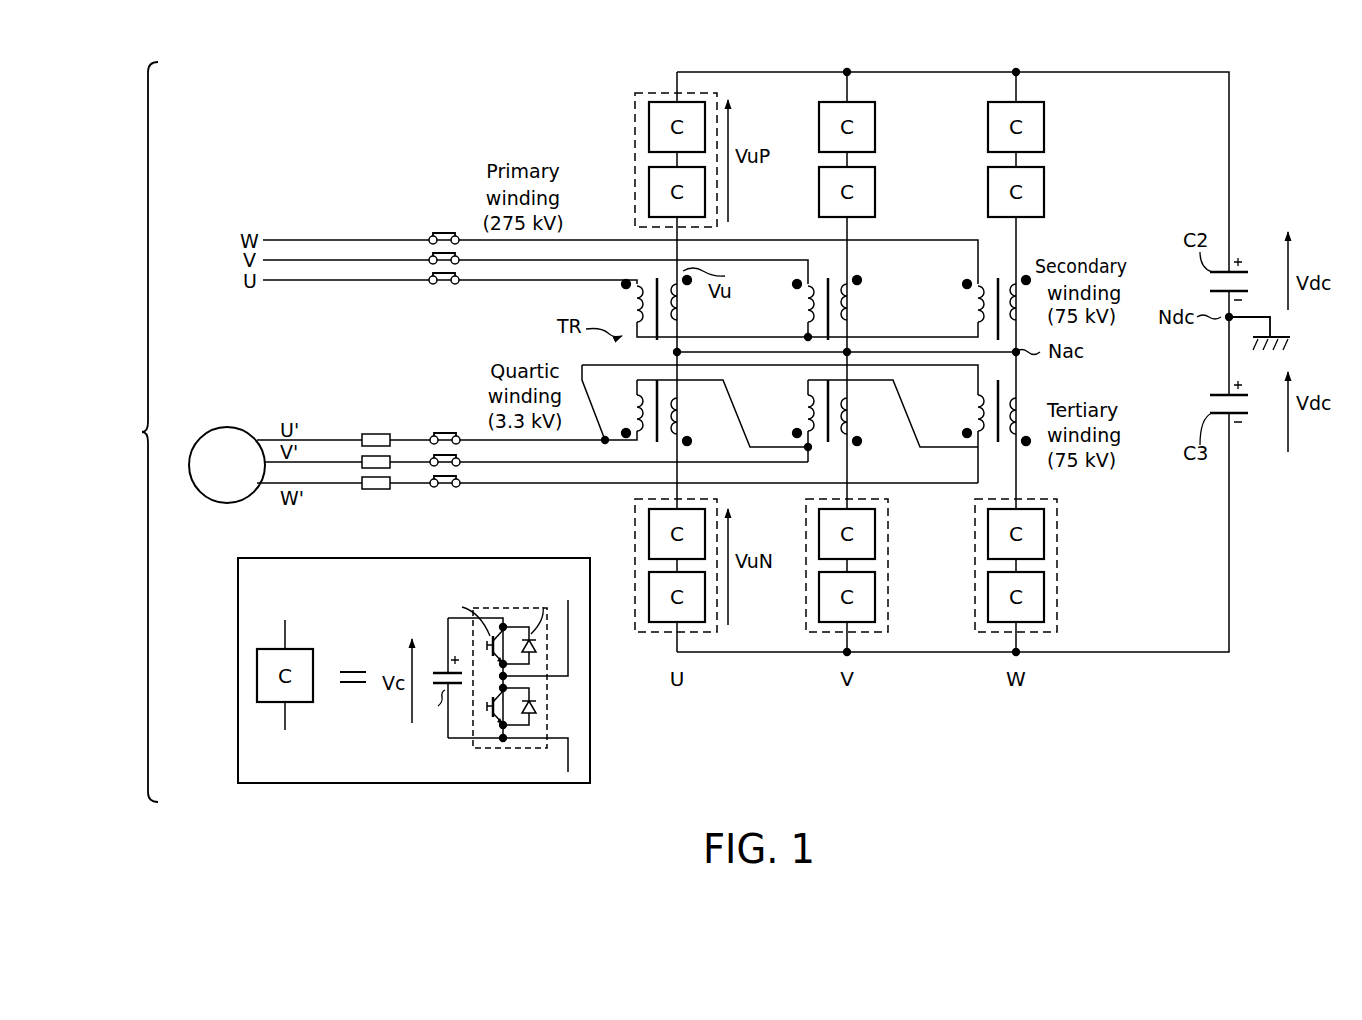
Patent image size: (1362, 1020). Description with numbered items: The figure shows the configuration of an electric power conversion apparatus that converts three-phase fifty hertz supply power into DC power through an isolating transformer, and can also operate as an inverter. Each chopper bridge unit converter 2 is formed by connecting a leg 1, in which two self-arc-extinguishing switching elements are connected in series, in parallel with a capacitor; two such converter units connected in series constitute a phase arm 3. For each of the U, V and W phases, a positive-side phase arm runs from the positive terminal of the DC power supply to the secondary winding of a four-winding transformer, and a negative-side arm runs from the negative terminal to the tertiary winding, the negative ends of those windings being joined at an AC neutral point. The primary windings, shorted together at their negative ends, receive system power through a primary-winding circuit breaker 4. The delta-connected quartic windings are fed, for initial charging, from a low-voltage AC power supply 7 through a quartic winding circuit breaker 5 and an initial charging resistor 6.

The leg 1 is at (497, 608).
The chopper bridge unit converter 2 is at (648, 128).
The phase arm 3 is at (648, 93).
The primary-winding circuit breaker 4 is at (436, 230).
The quartic winding circuit breaker 5 is at (448, 494).
The initial charging resistor 6 is at (380, 494).
The low-voltage AC power supply 7 is at (229, 427).